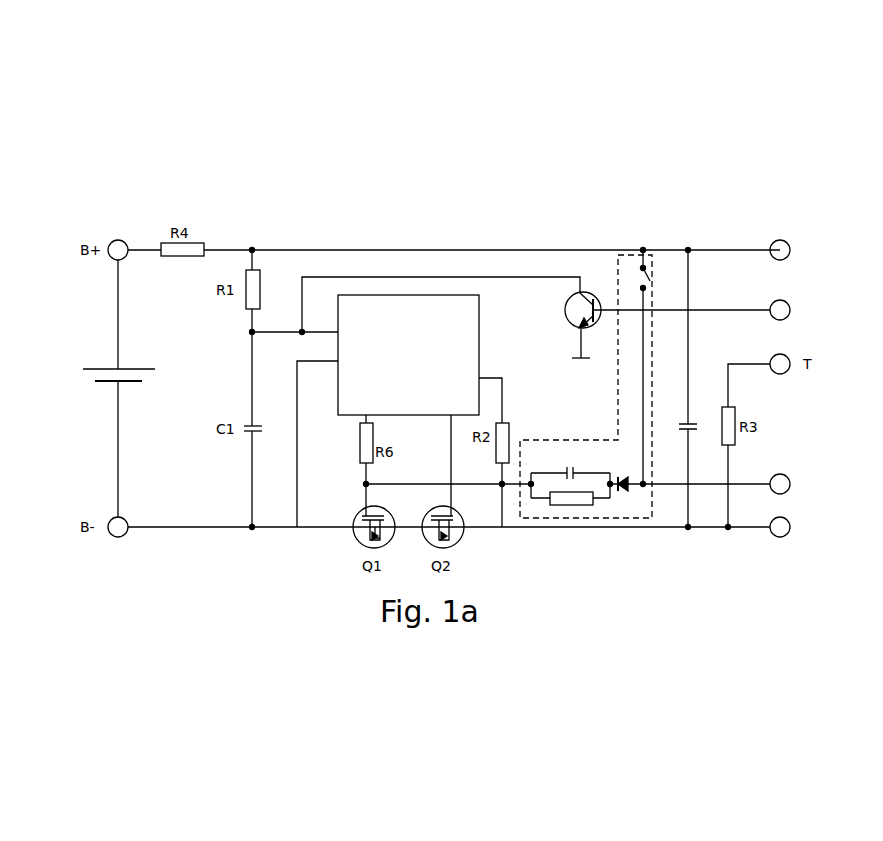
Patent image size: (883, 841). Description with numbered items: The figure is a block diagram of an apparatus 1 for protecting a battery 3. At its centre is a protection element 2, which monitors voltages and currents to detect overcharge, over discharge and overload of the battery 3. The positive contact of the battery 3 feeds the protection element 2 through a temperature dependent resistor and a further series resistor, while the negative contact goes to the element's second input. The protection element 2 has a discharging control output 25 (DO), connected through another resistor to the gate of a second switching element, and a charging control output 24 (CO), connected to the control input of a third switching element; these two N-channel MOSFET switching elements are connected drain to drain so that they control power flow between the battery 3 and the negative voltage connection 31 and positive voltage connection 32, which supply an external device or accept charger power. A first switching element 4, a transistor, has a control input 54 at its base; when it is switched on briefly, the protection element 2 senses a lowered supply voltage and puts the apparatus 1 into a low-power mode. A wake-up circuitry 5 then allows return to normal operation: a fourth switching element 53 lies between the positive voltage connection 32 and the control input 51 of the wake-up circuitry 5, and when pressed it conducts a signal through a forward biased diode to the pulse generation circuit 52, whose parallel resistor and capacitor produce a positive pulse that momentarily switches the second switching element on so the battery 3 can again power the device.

The apparatus 1 is at (73, 214).
The protection element 2 is at (480, 320).
The battery 3 is at (84, 366).
The first switching element 4 is at (566, 312).
The wake-up circuitry 5 is at (618, 415).
The charging control output 24 is at (450, 418).
The discharging control output 25 is at (360, 418).
The negative voltage connection 31 is at (779, 537).
The positive voltage connection 32 is at (790, 257).
The control input 51 is at (786, 475).
The pulse generation circuit 52 is at (546, 503).
The fourth switching element 53 is at (652, 283).
The control input 54 is at (790, 314).